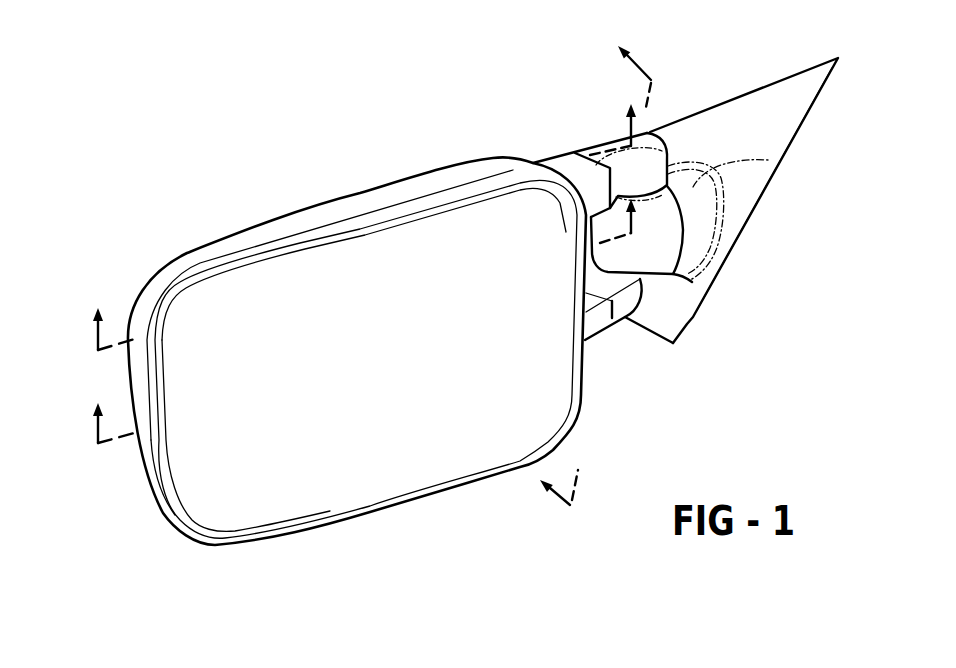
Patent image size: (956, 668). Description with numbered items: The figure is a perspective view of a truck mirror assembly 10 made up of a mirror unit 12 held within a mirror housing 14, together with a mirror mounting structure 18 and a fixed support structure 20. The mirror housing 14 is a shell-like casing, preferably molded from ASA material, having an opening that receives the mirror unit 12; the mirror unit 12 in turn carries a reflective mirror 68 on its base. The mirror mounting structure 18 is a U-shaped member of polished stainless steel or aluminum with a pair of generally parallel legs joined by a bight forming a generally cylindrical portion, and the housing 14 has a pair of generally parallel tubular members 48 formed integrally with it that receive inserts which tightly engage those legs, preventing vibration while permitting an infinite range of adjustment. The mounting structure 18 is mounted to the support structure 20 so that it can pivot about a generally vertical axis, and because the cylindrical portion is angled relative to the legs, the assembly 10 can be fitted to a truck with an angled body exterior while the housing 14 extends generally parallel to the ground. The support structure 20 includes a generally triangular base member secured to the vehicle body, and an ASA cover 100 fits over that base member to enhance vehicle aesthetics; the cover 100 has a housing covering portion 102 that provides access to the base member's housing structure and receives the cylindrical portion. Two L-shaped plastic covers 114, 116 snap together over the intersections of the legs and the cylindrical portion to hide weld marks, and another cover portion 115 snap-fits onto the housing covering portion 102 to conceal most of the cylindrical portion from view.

The truck mirror assembly 10 is at (286, 162).
The mirror unit 12 is at (277, 509).
The mirror housing 14 is at (406, 177).
The mirror mounting structure 18 is at (536, 143).
The fixed support structure 20 is at (735, 284).
The tubular members 48 is at (572, 160).
The reflective mirror 68 is at (345, 483).
The cover 100 is at (770, 87).
The housing covering portion 102 is at (693, 184).
The L-shaped plastic cover 114 is at (623, 310).
The cover portion 115 is at (663, 243).
The L-shaped plastic cover 116 is at (652, 140).